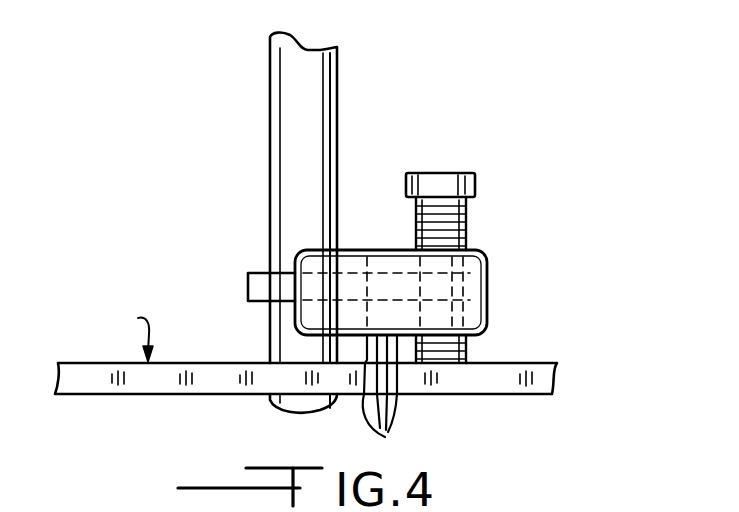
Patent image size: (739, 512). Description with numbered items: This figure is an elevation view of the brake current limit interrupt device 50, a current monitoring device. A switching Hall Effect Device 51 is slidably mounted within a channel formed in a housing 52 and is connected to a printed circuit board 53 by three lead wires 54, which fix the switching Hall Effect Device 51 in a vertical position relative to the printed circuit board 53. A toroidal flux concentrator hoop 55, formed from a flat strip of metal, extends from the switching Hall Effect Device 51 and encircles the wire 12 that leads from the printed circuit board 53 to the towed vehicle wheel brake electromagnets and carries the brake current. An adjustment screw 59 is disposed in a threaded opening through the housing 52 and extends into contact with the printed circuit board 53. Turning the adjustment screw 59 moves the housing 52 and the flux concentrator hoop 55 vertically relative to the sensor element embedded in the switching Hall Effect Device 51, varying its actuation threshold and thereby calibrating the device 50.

The brake current limit interrupt device 50 is at (426, 84).
The wire 12 is at (312, 108).
The switching Hall Effect Device 51 is at (387, 266).
The housing 52 is at (487, 290).
The printed circuit board 53 is at (543, 374).
The lead wires 54 is at (385, 437).
The toroidal flux concentrator hoop 55 is at (248, 287).
The adjustment screw 59 is at (460, 173).